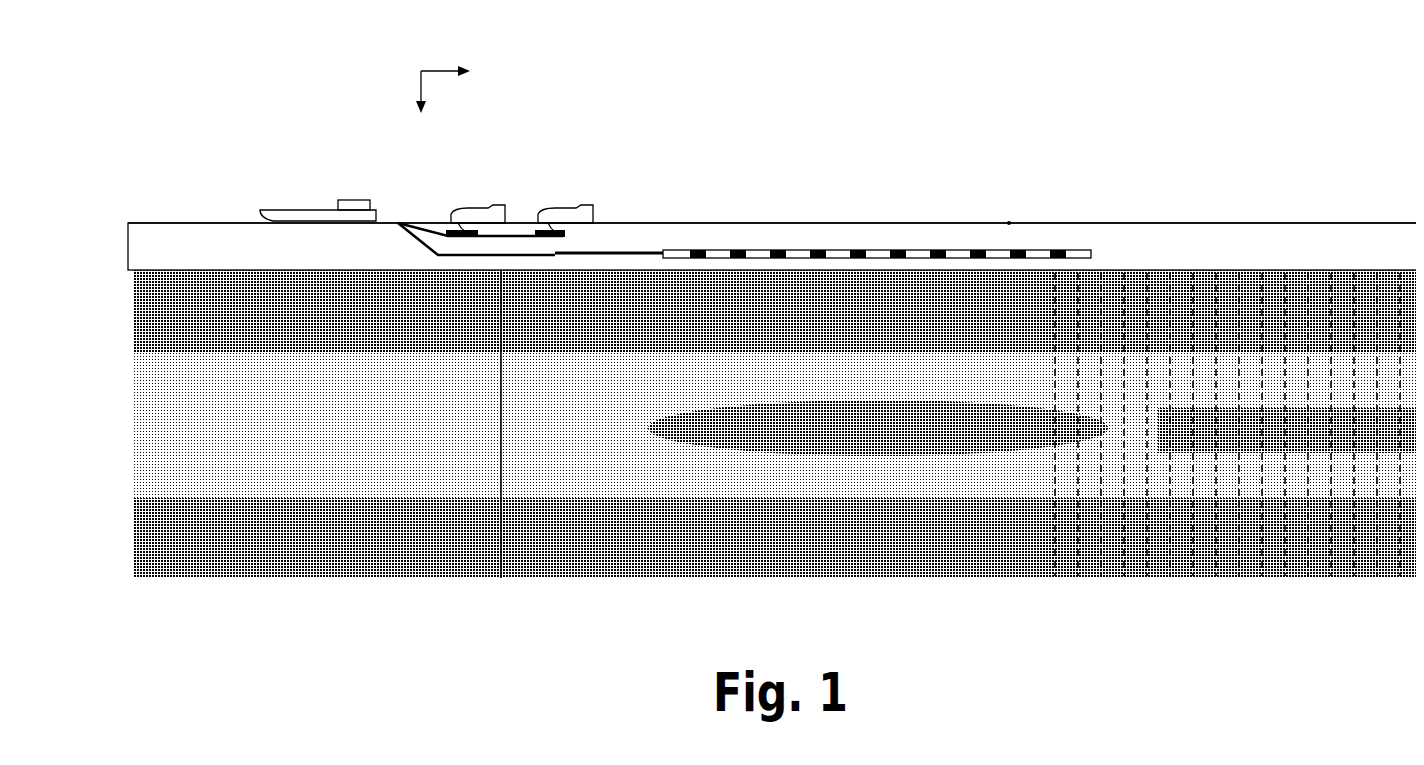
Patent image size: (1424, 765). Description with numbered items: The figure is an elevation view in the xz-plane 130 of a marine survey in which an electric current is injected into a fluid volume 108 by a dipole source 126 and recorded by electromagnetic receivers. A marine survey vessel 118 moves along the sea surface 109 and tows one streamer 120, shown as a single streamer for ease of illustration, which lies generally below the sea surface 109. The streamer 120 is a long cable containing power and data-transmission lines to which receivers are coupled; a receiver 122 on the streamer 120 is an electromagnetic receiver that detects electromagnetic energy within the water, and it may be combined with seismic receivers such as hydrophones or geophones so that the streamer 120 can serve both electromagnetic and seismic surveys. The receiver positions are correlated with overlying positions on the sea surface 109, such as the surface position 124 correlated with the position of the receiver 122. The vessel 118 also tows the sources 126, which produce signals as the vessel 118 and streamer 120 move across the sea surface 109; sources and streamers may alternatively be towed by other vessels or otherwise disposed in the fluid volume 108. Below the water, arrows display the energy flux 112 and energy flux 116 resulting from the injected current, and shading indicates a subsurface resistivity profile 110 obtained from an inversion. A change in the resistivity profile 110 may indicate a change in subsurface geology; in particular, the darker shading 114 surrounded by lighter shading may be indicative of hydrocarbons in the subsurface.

The fluid volume 108 is at (1337, 243).
The sea surface 109 is at (1185, 215).
The subsurface resistivity profile 110 is at (125, 312).
The energy flux 112 is at (495, 460).
The darker shading 114 is at (740, 428).
The energy flux 116 is at (350, 428).
The marine survey vessel 118 is at (287, 200).
The streamer 120 is at (858, 242).
The receiver 122 is at (1032, 243).
The surface position 124 is at (1001, 215).
The dipole source 126 is at (520, 213).
The xz-plane 130 is at (413, 63).